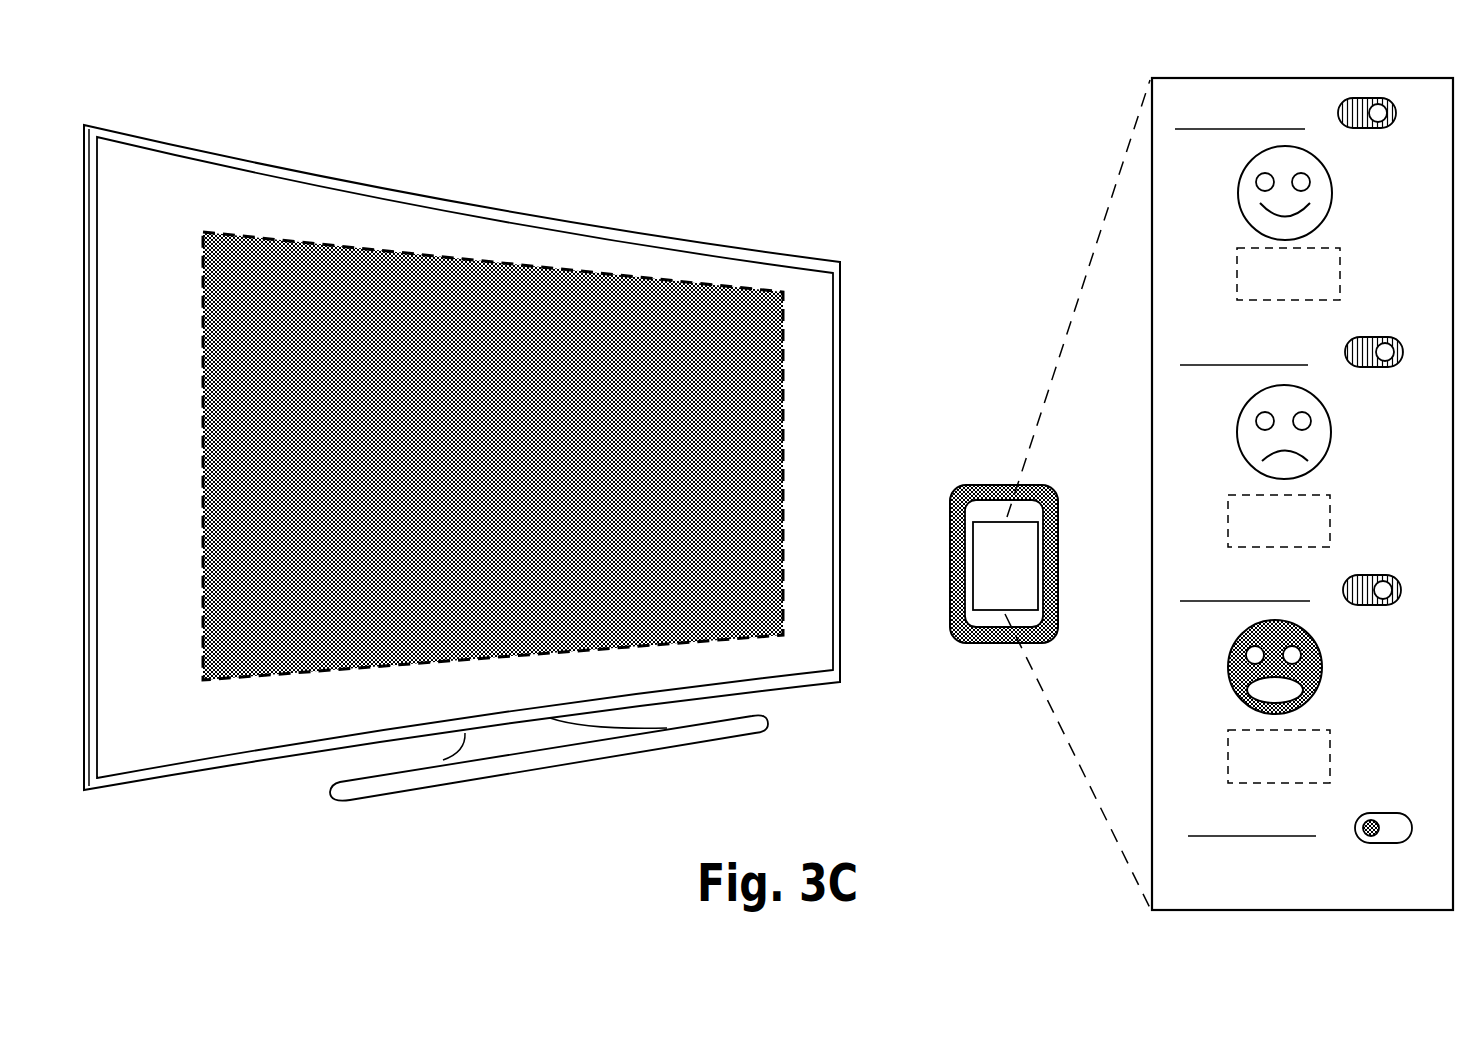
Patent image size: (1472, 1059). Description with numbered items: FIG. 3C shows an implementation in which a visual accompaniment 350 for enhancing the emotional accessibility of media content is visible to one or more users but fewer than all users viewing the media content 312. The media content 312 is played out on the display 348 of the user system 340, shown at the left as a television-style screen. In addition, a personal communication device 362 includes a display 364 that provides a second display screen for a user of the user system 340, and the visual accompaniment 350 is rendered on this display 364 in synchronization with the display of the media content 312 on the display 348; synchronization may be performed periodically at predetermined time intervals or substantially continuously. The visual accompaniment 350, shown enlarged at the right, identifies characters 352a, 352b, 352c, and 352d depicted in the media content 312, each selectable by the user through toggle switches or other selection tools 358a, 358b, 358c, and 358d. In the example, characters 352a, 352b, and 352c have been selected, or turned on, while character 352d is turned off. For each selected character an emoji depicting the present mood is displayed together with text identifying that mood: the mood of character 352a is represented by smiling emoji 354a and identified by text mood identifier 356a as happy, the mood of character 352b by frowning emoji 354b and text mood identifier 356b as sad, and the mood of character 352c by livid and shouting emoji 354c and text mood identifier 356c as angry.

The display 348 is at (220, 193).
The user system 340 is at (735, 92).
The media content 312 is at (345, 366).
The personal communication device 362 is at (943, 458).
The visual accompaniment 350 is at (1036, 584).
The display 364 is at (988, 623).
The character 352a is at (1183, 131).
The character 352b is at (1187, 367).
The character 352c is at (1185, 603).
The character 352d is at (1205, 838).
The smiling emoji 354a is at (1324, 226).
The frowning emoji 354b is at (1322, 468).
The livid and shouting emoji 354c is at (1313, 700).
The text mood identifier 356a is at (1342, 268).
The text mood identifier 356b is at (1332, 516).
The text mood identifier 356c is at (1332, 752).
The toggle switch 358a is at (1380, 130).
The toggle switch 358b is at (1386, 369).
The toggle switch 358c is at (1385, 607).
The toggle switch 358d is at (1390, 845).